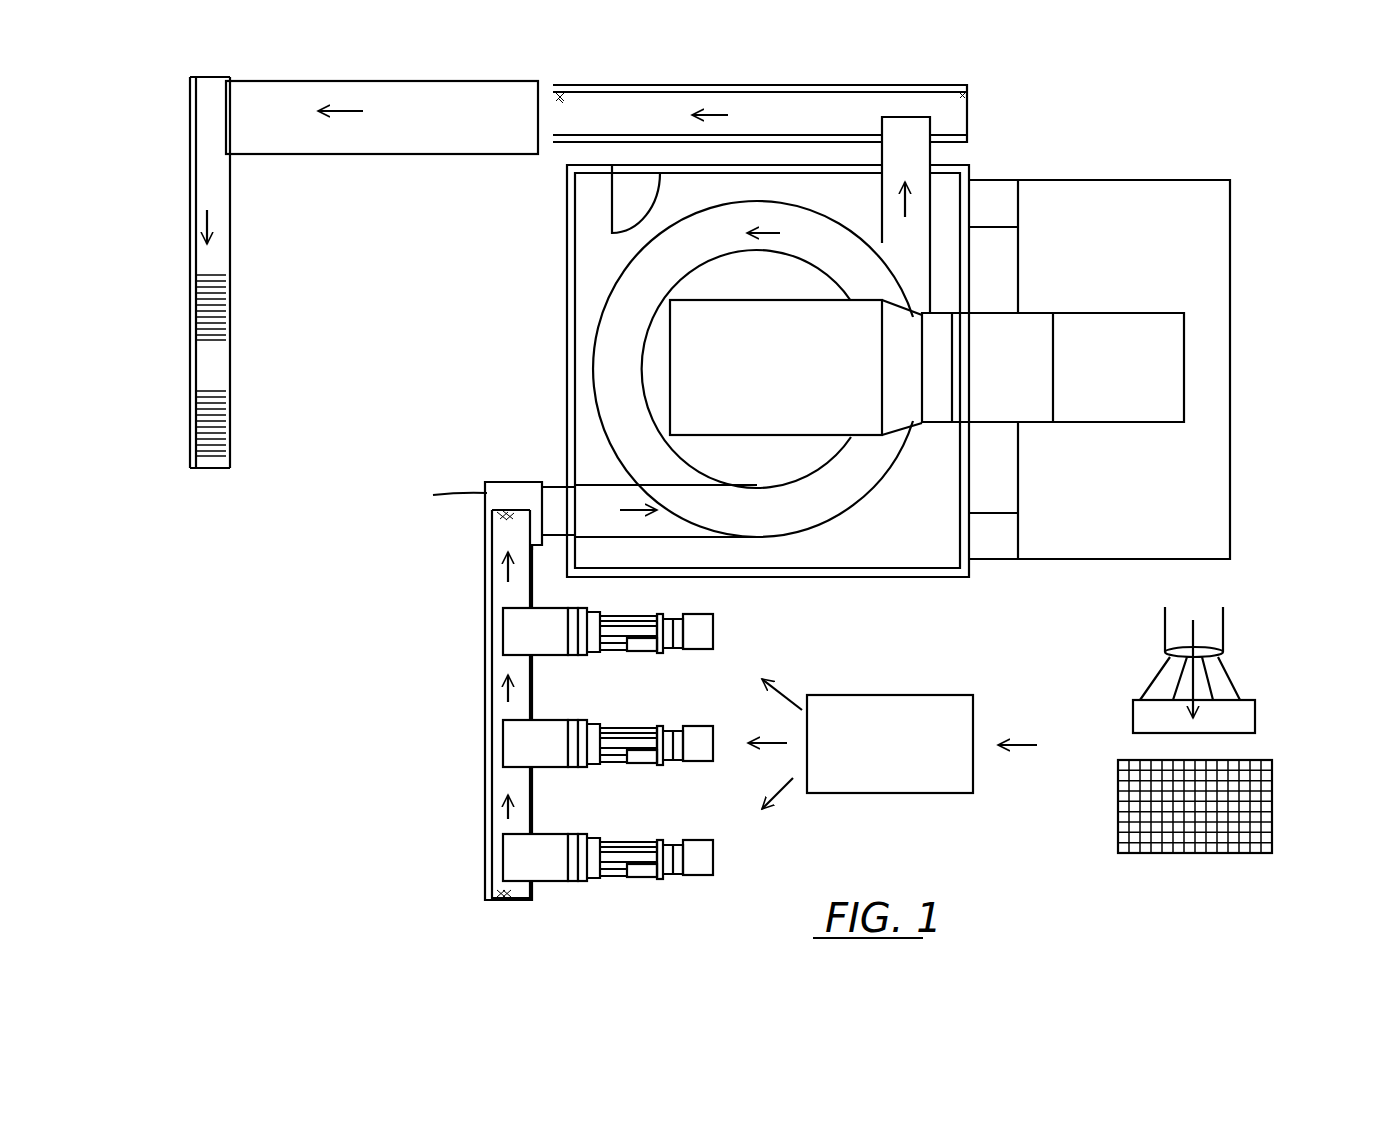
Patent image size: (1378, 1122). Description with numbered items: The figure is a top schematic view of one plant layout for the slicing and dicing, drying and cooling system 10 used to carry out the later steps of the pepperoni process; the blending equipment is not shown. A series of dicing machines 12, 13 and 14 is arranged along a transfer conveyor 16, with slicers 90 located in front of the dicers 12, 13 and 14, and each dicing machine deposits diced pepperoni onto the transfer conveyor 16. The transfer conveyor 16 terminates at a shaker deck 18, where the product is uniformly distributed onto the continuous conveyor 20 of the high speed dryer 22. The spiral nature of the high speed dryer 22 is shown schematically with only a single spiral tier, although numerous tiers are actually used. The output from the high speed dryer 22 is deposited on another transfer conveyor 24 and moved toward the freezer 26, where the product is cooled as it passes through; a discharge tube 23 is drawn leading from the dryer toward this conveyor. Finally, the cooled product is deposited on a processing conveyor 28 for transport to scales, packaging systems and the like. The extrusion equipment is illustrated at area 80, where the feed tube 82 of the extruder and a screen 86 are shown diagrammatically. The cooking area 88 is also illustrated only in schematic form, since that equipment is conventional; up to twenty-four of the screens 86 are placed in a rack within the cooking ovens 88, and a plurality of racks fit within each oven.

The slicing and dicing, drying and cooling system 10 is at (438, 402).
The dicing machine 12 is at (638, 890).
The dicing machine 13 is at (633, 777).
The dicing machine 14 is at (640, 659).
The transfer conveyor 16 is at (495, 667).
The shaker deck 18 is at (497, 476).
The continuous conveyor 20 is at (551, 484).
The high speed dryer 22 is at (567, 327).
The discharge tube 23 is at (932, 152).
The transfer conveyor 24 is at (840, 66).
The freezer 26 is at (446, 82).
The processing conveyor 28 is at (195, 212).
The extrusion equipment area 80 is at (1315, 681).
The feed tube 82 is at (1255, 715).
The screen 86 is at (1272, 797).
The cooking area 88 is at (899, 778).
The slicer 90 is at (712, 626).